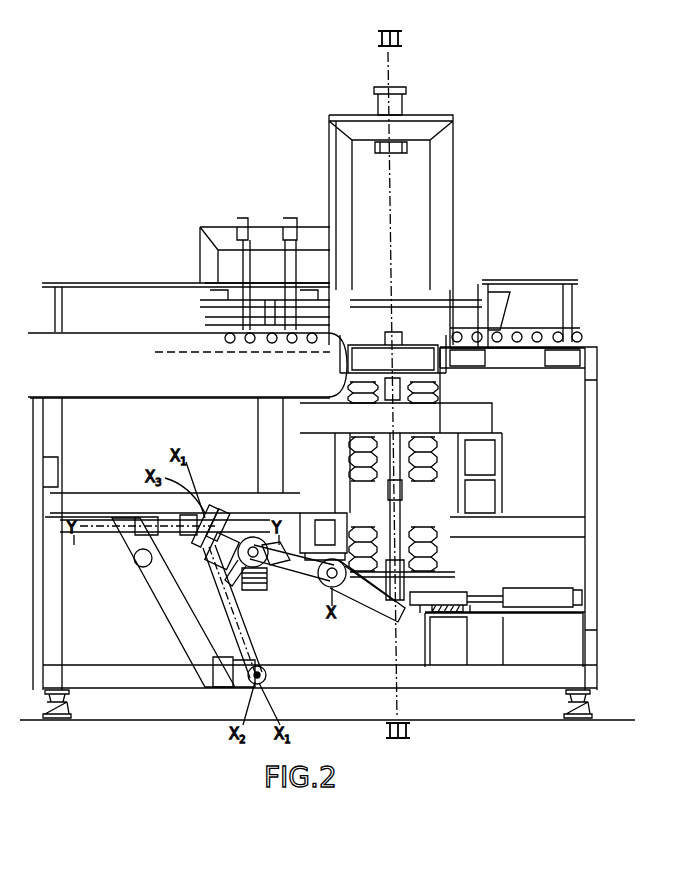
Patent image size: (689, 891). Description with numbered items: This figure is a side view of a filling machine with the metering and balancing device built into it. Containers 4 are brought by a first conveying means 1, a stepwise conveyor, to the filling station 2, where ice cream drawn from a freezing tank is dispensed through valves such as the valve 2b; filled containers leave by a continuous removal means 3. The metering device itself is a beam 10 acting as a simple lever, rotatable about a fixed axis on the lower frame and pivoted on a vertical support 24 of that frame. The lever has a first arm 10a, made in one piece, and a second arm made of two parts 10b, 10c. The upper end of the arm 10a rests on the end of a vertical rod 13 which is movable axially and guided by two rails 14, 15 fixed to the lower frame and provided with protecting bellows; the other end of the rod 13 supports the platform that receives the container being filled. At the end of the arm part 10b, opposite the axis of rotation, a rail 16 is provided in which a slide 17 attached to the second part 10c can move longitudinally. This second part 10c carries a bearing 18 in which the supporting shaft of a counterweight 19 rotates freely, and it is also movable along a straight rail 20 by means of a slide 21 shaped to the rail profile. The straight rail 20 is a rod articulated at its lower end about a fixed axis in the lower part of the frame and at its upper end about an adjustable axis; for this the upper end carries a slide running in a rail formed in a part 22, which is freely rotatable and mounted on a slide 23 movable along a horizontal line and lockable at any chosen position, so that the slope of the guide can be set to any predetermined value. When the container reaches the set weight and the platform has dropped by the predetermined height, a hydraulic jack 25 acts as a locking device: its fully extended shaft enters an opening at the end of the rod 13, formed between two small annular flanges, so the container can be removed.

The first conveying means 1 is at (162, 328).
The filling station 2 is at (453, 175).
The valve 2b is at (408, 97).
The continuous removal means 3 is at (578, 330).
The container 4 is at (410, 340).
The beam 10 is at (369, 606).
The first arm 10a is at (360, 596).
The second arm first part 10b is at (298, 575).
The second arm second part 10c is at (236, 515).
The vertical rod 13 is at (432, 456).
The rail 14 is at (432, 484).
The rail 15 is at (350, 480).
The rail 16 is at (276, 566).
The slide 17 is at (260, 590).
The bearing 18 is at (254, 568).
The counterweight 19 is at (240, 570).
The straight rail 20 is at (240, 635).
The slide 21 is at (207, 562).
The part 22 is at (222, 515).
The slide 23 is at (185, 520).
The vertical support 24 is at (213, 618).
The hydraulic jack 25 is at (457, 594).